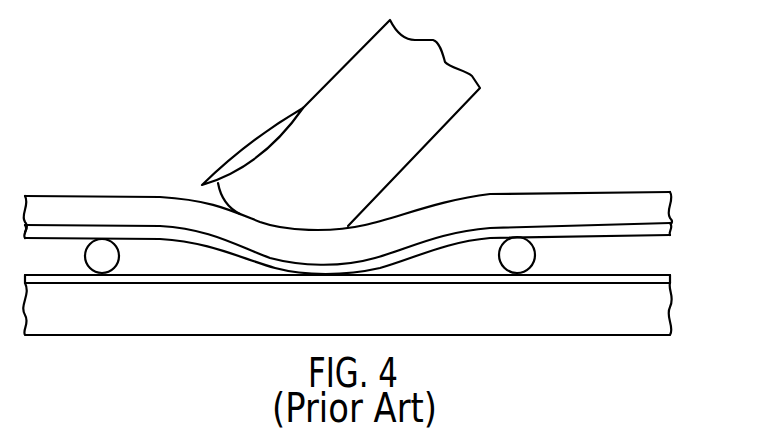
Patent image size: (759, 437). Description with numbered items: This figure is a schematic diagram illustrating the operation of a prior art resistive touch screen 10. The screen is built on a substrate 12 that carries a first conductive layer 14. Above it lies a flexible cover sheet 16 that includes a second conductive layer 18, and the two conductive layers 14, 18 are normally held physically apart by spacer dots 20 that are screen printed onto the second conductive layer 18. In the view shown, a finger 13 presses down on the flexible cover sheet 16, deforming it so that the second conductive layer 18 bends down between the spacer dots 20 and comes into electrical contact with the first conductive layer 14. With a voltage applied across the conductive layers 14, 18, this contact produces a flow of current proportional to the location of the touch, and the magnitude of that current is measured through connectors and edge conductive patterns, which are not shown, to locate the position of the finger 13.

The resistive touch screen 10 is at (388, 188).
The substrate 12 is at (656, 313).
The finger 13 is at (420, 60).
The first conductive layer 14 is at (658, 280).
The flexible cover sheet 16 is at (656, 202).
The second conductive layer 18 is at (656, 229).
The spacer dots 20 is at (517, 250).